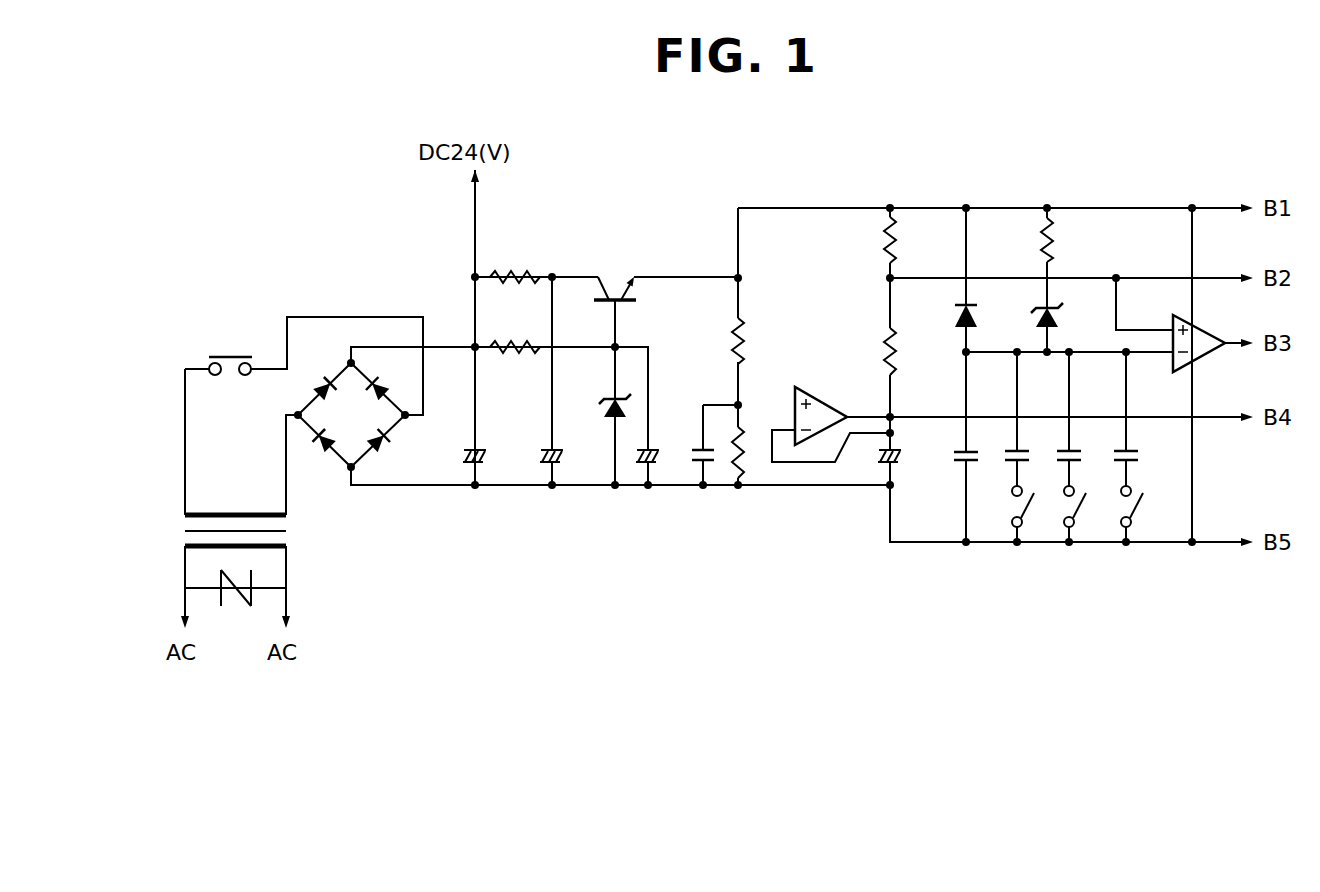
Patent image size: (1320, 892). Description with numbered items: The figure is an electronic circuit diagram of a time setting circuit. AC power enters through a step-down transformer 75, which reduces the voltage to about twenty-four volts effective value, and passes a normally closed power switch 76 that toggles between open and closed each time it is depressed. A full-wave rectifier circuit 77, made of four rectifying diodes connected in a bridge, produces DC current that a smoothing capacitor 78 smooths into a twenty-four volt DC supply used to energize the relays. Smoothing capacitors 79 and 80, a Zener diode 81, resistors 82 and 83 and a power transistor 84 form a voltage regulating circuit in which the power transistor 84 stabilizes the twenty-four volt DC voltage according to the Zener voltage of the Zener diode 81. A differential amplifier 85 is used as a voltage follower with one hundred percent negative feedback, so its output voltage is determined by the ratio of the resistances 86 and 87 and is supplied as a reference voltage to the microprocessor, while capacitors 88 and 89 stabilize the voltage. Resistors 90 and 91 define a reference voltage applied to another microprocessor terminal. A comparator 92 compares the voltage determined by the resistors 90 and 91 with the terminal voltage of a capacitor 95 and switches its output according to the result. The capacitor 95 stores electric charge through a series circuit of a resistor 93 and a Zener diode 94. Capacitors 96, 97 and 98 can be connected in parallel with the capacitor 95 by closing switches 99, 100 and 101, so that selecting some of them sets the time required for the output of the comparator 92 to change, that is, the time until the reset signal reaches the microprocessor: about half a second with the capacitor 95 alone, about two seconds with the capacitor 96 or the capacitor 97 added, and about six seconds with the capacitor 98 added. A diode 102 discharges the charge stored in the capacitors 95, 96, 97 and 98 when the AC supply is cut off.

The step-down transformer 75 is at (185, 531).
The power switch 76 is at (231, 356).
The full-wave rectifier circuit 77 is at (350, 458).
The smoothing capacitor 78 is at (465, 456).
The smoothing capacitor 79 is at (542, 456).
The smoothing capacitor 80 is at (660, 456).
The Zener diode 81 is at (606, 411).
The resistor 82 is at (519, 272).
The resistor 83 is at (508, 352).
The power transistor 84 is at (613, 290).
The differential amplifier 85 is at (825, 397).
The resistance 86 is at (750, 346).
The resistance 87 is at (750, 458).
The capacitor 88 is at (692, 464).
The capacitor 89 is at (902, 457).
The resistor 90 is at (883, 243).
The resistor 91 is at (897, 352).
The comparator 92 is at (1206, 329).
The resistor 93 is at (1054, 243).
The Zener diode 94 is at (1058, 322).
The capacitor 95 is at (953, 455).
The capacitor 96 is at (1004, 455).
The capacitor 97 is at (1056, 455).
The capacitor 98 is at (1113, 455).
The switch 99 is at (1036, 503).
The switch 100 is at (1088, 503).
The switch 101 is at (1146, 503).
The diode 102 is at (978, 320).